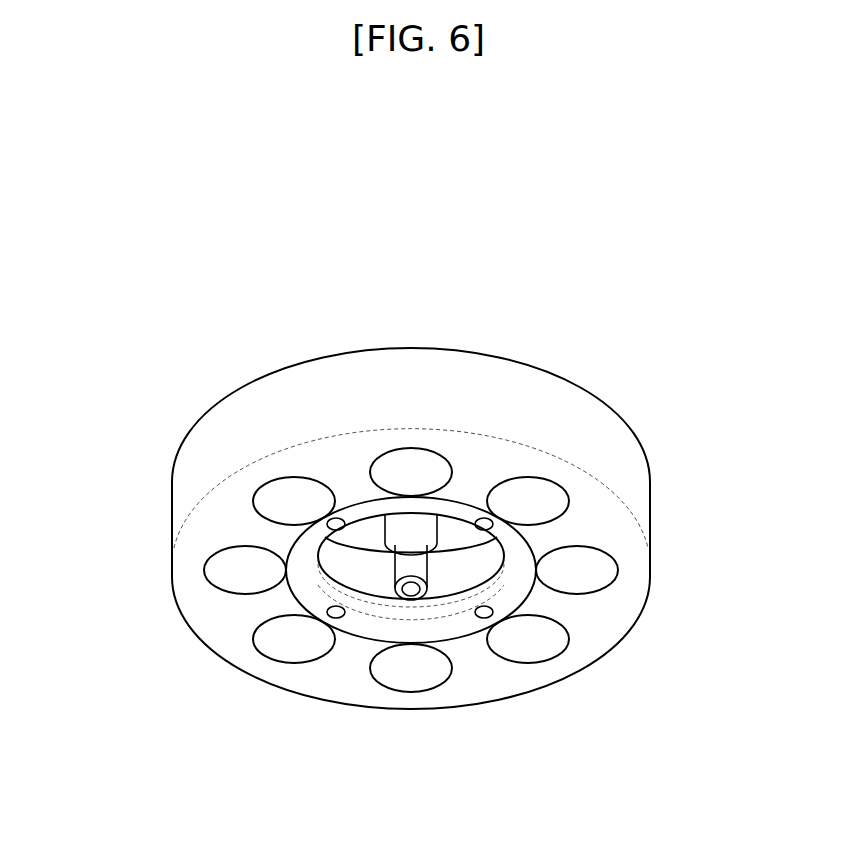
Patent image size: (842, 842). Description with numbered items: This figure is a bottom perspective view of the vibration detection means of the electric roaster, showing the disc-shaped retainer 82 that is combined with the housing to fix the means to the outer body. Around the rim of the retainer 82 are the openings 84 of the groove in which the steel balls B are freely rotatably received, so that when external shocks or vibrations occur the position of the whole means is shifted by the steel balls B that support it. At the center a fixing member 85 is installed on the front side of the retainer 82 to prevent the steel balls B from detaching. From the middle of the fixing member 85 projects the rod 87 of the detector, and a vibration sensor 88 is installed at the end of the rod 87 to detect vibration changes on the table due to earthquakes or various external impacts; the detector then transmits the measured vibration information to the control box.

The retainer 82 is at (262, 366).
The holes 84 is at (215, 575).
The fixing member 85 is at (297, 557).
The rod 87 is at (410, 596).
The vibration sensor 88 is at (424, 572).
The steel balls B is at (243, 567).